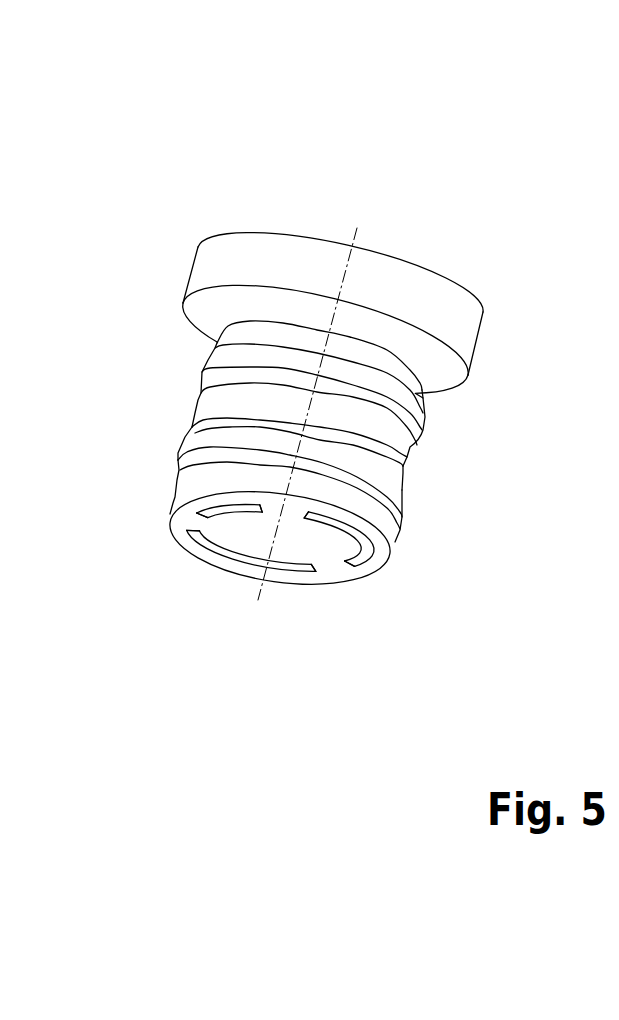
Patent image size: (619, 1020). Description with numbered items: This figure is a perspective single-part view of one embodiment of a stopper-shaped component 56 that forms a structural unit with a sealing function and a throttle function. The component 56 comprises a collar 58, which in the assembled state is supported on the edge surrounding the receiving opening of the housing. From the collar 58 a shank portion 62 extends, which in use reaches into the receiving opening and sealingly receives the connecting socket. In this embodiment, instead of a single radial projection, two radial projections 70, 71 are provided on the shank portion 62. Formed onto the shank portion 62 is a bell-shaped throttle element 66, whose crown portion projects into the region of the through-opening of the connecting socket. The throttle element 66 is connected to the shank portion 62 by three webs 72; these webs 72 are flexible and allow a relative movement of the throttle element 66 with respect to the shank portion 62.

The stopper-shaped component 56 is at (373, 382).
The collar 58 is at (423, 296).
The radial projection 70 is at (420, 420).
The shank portion 62 is at (405, 458).
The radial projection 71 is at (398, 500).
The bell-shaped throttle element 66 is at (320, 537).
The webs 72 is at (340, 570).